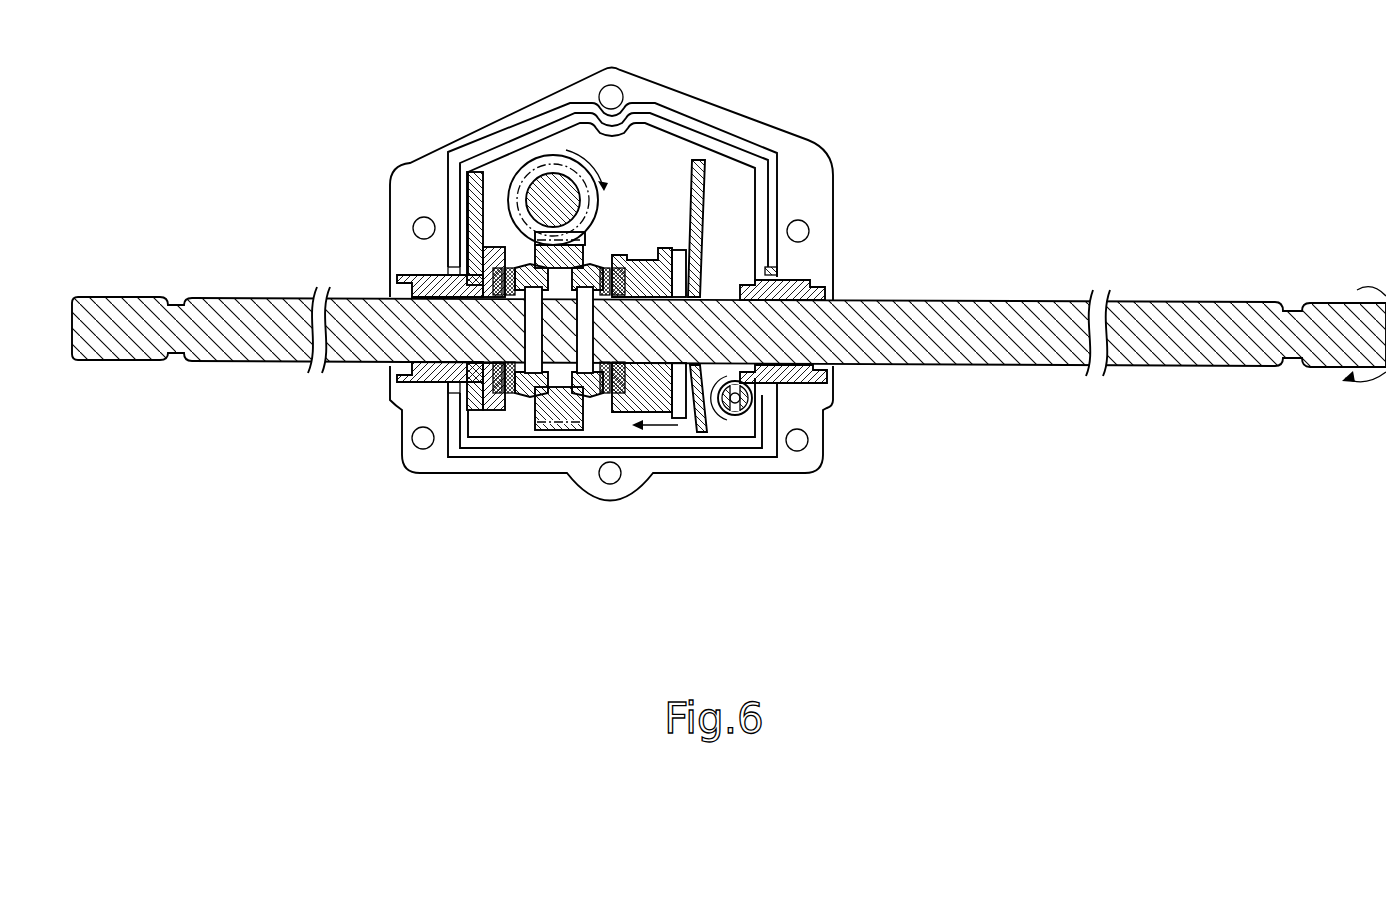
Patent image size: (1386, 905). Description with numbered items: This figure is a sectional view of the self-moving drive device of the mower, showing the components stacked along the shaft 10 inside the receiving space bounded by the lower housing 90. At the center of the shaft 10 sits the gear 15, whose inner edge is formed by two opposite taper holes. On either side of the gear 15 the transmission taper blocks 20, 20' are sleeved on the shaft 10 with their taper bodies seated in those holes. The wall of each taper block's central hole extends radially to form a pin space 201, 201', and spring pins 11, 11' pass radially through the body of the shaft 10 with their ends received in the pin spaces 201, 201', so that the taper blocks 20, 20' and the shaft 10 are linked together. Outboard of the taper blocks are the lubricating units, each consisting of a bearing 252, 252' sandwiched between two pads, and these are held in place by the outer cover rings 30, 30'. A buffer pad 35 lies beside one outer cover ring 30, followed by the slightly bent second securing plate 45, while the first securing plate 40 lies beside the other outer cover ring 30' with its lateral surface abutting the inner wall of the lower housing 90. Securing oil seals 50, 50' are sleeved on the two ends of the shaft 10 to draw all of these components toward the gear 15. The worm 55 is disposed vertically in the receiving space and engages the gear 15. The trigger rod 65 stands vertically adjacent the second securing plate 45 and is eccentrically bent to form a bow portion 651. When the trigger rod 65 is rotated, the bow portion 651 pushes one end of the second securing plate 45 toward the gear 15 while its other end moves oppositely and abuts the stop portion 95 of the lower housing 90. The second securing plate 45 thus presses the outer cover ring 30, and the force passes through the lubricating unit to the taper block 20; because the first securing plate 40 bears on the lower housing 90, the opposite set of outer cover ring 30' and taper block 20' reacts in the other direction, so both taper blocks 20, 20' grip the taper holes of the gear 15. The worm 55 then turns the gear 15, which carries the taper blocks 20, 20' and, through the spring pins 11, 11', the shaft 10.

The shaft 10 is at (998, 300).
The spring pin 11 is at (588, 239).
The spring pin 11' is at (420, 213).
The gear 15 is at (553, 423).
The transmission taper block 20 is at (575, 416).
The transmission taper block 20' is at (501, 418).
The outer cover ring 30 is at (649, 209).
The outer cover ring 30' is at (427, 233).
The buffer pad 35 is at (694, 425).
The first securing plate 40 is at (476, 172).
The second securing plate 45 is at (699, 160).
The securing oil seal 50 is at (816, 295).
The securing oil seal 50' is at (402, 297).
The worm 55 is at (547, 188).
The trigger rod 65 is at (811, 455).
The bow portion 651 is at (732, 418).
The lower housing 90 is at (812, 148).
The stop portion 95 is at (712, 152).
The pin space 201 is at (619, 414).
The pin space 201' is at (458, 397).
The bearing 252 is at (641, 404).
The bearing 252' is at (430, 362).